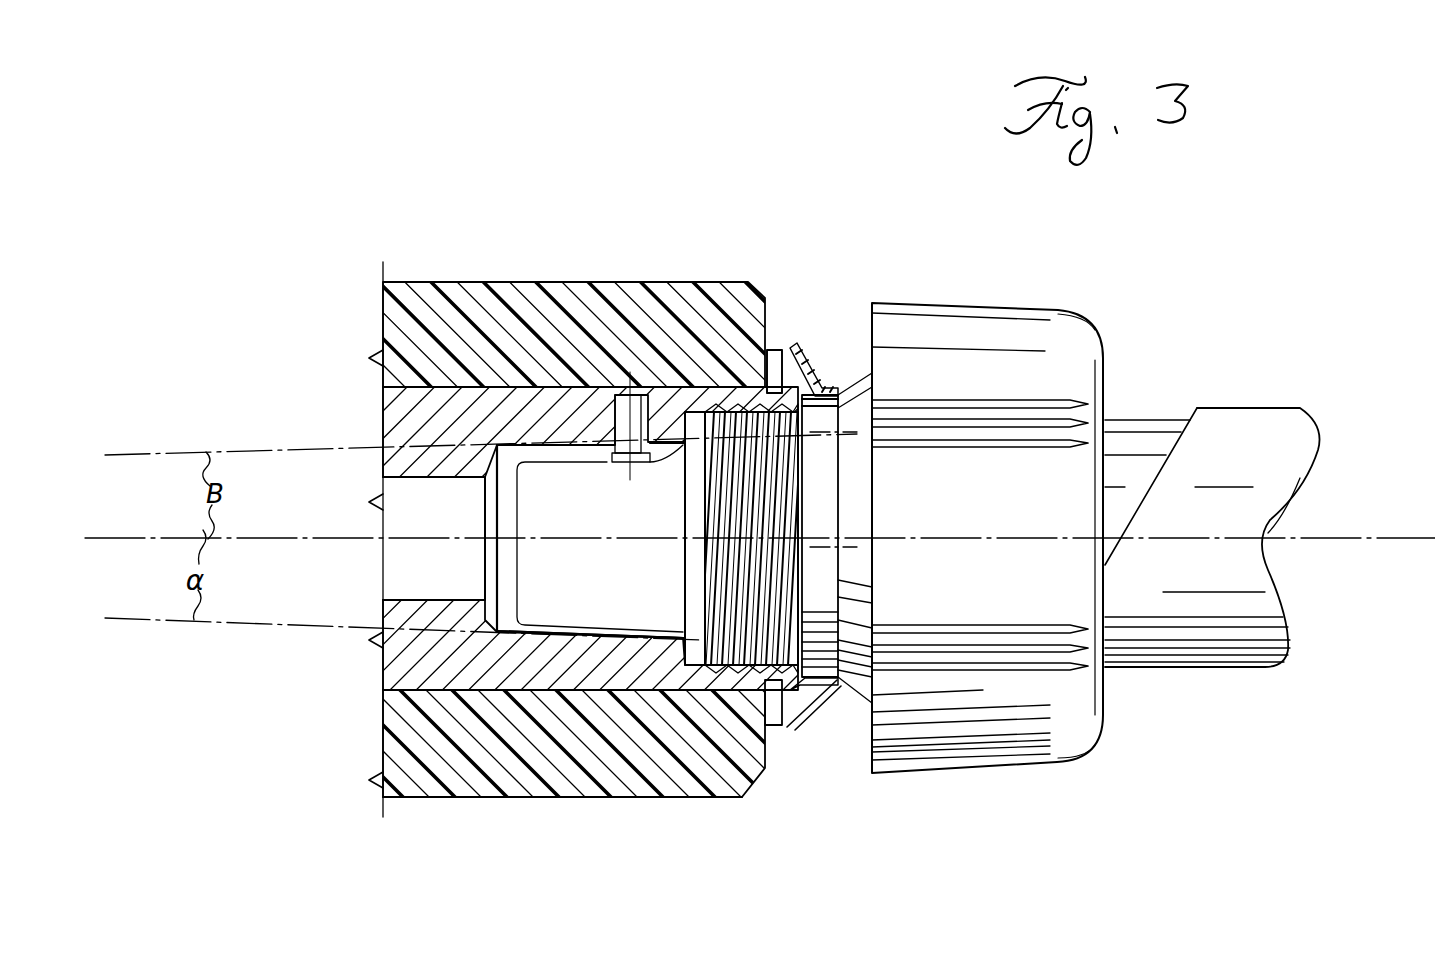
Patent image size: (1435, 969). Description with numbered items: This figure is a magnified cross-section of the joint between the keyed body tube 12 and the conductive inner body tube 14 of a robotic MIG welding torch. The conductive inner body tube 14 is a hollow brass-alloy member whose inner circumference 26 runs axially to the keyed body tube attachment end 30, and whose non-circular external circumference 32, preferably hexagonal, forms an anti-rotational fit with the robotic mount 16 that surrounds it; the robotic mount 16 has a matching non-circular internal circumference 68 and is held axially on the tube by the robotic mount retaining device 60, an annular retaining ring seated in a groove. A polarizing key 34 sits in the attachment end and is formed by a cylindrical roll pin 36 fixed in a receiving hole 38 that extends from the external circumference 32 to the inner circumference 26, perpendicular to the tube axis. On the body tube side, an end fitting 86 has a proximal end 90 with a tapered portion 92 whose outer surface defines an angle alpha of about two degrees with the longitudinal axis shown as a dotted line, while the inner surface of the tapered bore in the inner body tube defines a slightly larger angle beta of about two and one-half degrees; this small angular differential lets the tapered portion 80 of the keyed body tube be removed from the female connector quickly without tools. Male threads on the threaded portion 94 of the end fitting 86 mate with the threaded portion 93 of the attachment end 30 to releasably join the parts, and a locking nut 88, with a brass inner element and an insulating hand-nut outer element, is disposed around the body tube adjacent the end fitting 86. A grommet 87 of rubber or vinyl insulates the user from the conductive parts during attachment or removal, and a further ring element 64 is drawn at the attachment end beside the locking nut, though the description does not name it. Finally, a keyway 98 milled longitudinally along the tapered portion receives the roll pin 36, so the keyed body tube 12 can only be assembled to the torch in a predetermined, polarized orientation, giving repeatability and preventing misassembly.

The keyed body tube 12 is at (1250, 408).
The conductive inner body tube 14 is at (383, 672).
The robotic mount 16 is at (478, 282).
The inner circumference 26 is at (383, 580).
The keyed body tube attachment end 30 is at (780, 350).
The external circumference 32 is at (600, 690).
The key 34 is at (636, 372).
The roll pin 36 is at (610, 460).
The receiving hole 38 is at (655, 395).
The robotic mount retaining device 60 is at (782, 725).
The seal ring 64 is at (775, 350).
The non-circular internal circumference 68 is at (383, 745).
The tapered portion 80 is at (335, 539).
The end fitting 86 is at (822, 392).
The grommet 87 is at (828, 356).
The locking nut 88 is at (1095, 318).
The proximal end 90 is at (497, 565).
The tapered portion 92 is at (572, 612).
The threaded portion 93 is at (700, 700).
The threaded portion 94 is at (720, 668).
The keyway 98 is at (557, 450).